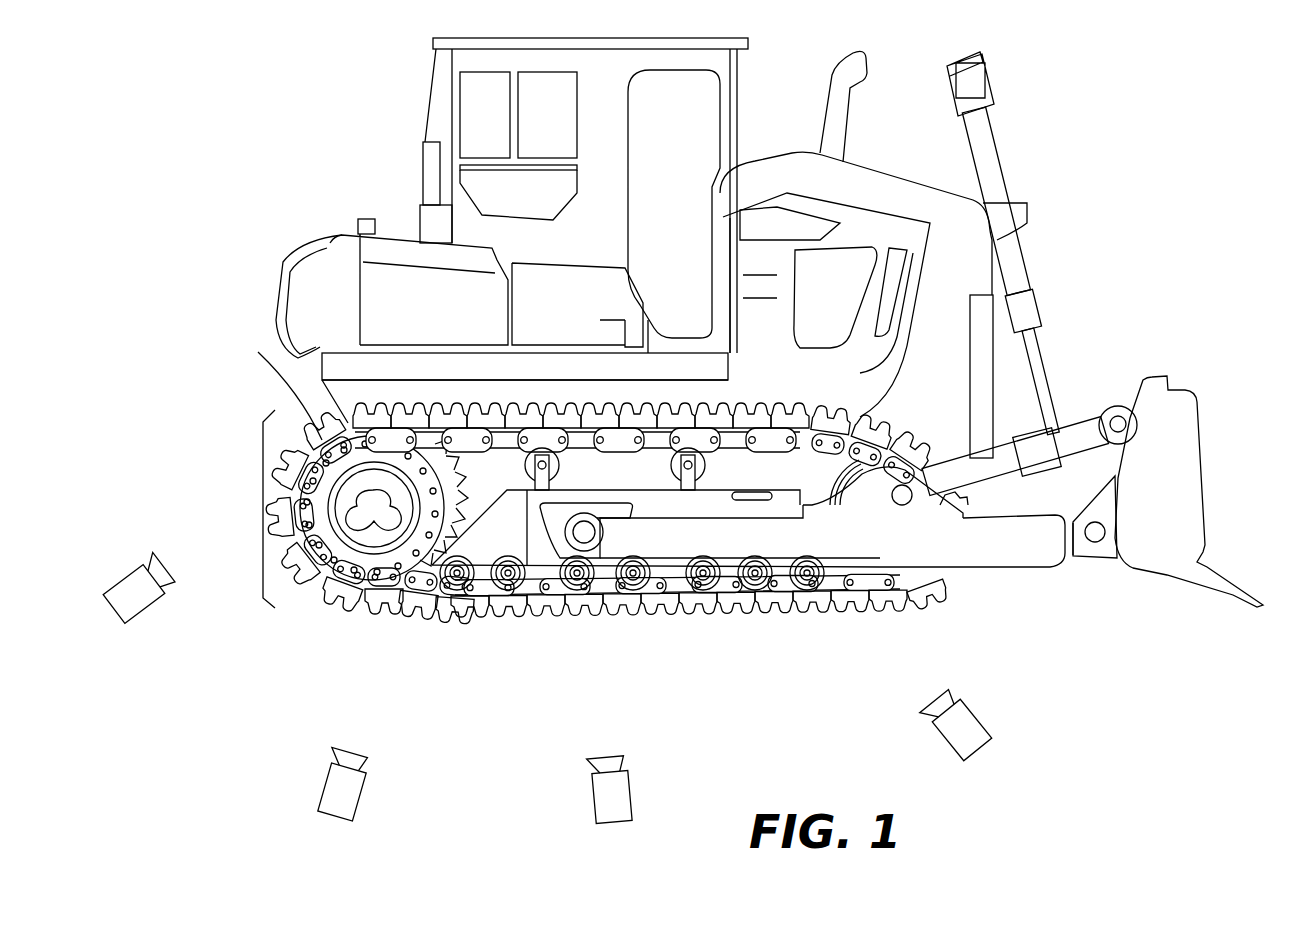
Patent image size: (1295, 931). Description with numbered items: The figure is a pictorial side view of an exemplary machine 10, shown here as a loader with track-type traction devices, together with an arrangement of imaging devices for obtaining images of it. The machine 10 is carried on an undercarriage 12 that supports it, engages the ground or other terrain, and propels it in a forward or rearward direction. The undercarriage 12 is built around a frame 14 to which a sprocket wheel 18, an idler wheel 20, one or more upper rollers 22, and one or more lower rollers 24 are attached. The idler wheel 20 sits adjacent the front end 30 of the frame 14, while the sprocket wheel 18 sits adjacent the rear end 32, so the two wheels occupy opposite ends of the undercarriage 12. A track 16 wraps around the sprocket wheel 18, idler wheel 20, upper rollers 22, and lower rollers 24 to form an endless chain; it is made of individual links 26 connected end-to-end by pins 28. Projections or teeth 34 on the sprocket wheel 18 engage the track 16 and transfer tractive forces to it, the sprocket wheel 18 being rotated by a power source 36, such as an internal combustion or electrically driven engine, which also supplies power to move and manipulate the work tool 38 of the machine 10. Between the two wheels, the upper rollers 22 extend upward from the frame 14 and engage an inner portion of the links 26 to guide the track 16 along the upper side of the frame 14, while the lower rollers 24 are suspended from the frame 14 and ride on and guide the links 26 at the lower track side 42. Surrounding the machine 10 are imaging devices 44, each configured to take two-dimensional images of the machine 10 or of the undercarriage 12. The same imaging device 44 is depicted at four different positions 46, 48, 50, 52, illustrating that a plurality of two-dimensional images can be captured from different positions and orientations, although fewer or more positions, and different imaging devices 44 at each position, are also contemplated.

The machine 10 is at (1135, 158).
The undercarriage 12 is at (263, 507).
The frame 14 is at (383, 386).
The track 16 is at (720, 618).
The sprocket wheel 18 is at (353, 533).
The idler wheel 20 is at (863, 488).
The upper rollers 22 is at (560, 445).
The lower rollers 24 is at (520, 590).
The links 26 is at (665, 440).
The pins 28 is at (330, 435).
The front end 30 is at (957, 611).
The rear end 32 is at (232, 598).
The projections (teeth) 34 is at (440, 487).
The power source 36 is at (857, 250).
The work tool 38 is at (1189, 491).
The lower track side 42 is at (500, 396).
The imaging device 44 is at (546, 712).
The position 46 is at (104, 642).
The position 48 is at (330, 845).
The position 50 is at (630, 852).
The position 52 is at (988, 780).